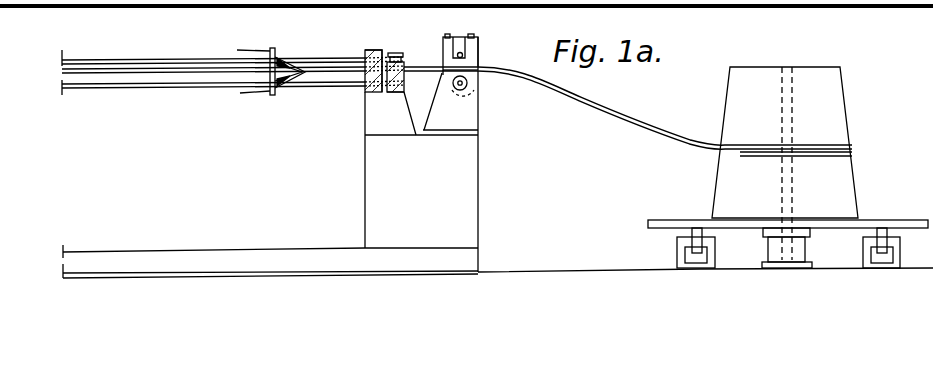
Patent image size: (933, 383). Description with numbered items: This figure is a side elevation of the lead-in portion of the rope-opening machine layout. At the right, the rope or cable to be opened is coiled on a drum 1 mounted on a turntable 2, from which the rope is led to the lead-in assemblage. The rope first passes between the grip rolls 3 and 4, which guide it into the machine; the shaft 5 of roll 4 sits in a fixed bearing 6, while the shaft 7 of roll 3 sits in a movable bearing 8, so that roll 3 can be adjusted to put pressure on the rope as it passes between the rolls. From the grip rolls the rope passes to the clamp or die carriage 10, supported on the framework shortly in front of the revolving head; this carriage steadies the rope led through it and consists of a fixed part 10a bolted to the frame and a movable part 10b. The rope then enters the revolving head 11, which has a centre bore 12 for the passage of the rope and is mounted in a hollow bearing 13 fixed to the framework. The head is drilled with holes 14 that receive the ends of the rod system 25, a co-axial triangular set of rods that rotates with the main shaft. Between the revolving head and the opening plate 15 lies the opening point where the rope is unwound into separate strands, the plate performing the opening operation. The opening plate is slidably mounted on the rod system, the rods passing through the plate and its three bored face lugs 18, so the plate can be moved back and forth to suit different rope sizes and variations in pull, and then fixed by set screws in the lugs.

The drum 1 is at (843, 132).
The turntable 2 is at (895, 223).
The grip roll 3 is at (474, 42).
The grip roll 4 is at (468, 84).
The shaft 5 is at (450, 83).
The fixed bearing 6 is at (465, 92).
The shaft 7 is at (452, 53).
The movable bearing 8 is at (478, 52).
The clamp or die carriage 10 is at (387, 84).
The fixed part 10a is at (395, 90).
The movable part 10b is at (403, 58).
The revolving head 11 is at (375, 52).
The centre bore 12 is at (365, 85).
The hollow bearing 13 is at (365, 94).
The holes 14 is at (372, 56).
The opening plate 15 is at (272, 50).
The bored face lugs 18 is at (288, 60).
The rod system 25 is at (184, 70).